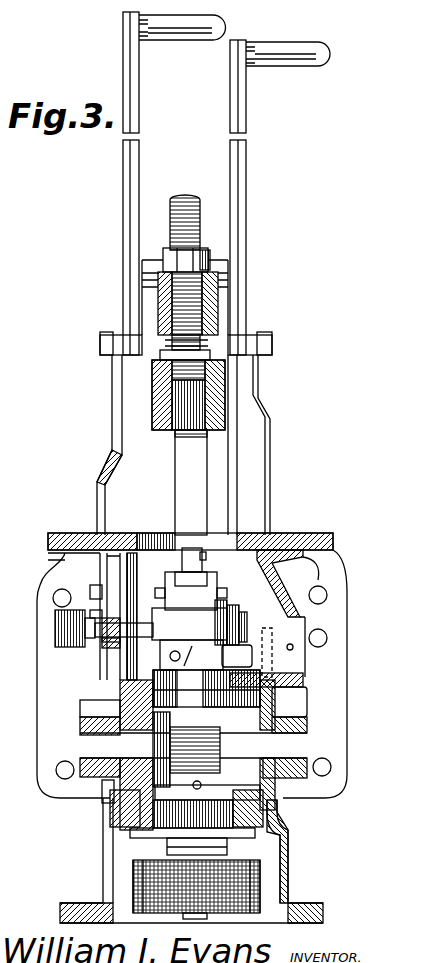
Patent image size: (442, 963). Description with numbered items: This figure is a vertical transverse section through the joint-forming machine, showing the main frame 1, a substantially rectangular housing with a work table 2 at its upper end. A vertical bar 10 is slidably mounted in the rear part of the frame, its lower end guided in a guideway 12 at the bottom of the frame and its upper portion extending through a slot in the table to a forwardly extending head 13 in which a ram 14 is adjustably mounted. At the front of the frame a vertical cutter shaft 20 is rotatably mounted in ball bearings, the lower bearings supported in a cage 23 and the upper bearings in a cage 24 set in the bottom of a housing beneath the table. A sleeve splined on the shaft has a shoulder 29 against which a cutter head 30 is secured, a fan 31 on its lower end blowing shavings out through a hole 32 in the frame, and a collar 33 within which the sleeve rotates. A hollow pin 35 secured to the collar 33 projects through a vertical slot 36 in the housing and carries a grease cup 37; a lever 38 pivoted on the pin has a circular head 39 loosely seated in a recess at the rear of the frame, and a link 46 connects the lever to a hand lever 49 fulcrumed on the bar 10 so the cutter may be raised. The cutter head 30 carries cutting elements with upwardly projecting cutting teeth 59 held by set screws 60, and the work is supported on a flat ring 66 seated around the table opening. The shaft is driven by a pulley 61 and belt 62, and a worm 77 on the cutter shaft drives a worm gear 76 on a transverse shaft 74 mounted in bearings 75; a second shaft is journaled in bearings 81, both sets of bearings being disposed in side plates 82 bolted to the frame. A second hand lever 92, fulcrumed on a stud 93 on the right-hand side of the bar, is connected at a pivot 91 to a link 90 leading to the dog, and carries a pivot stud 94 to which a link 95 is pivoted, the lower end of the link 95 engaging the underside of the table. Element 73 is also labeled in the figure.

The main frame 1 is at (286, 840).
The work table 2 is at (308, 533).
The vertical bar 10 is at (175, 503).
The guideway 12 is at (230, 847).
The head 13 is at (156, 308).
The ram 14 is at (162, 433).
The cutter shaft 20 is at (182, 557).
The cage 23 is at (268, 820).
The cage 24 is at (206, 688).
The shoulder 29 is at (232, 620).
The cutter head 30 is at (230, 608).
The fan 31 is at (232, 655).
The hole 32 is at (300, 633).
The collar 33 is at (189, 635).
The pin 35 is at (140, 628).
The vertical slot 36 is at (124, 590).
The grease cup 37 is at (72, 627).
The lever 38 is at (112, 647).
The circular head 39 is at (100, 558).
The link 46 is at (112, 455).
The hand lever 49 is at (123, 186).
The cutting teeth 59 is at (200, 557).
The set screws 60 is at (155, 594).
The pulley 61 is at (200, 920).
The belt 62 is at (262, 886).
The flat ring 66 is at (140, 533).
The bearing block 73 is at (122, 818).
The transverse shaft 74 is at (300, 742).
The bearings 75 is at (98, 776).
The worm gear 76 is at (104, 798).
The worm 77 is at (210, 740).
The bearings 81 is at (88, 706).
The side plates 82 is at (118, 691).
The link 90 is at (228, 478).
The pivot connection 91 is at (230, 266).
The hand lever 92 is at (246, 183).
The stud 93 is at (210, 348).
The pivot stud 94 is at (272, 336).
The link 95 is at (268, 438).